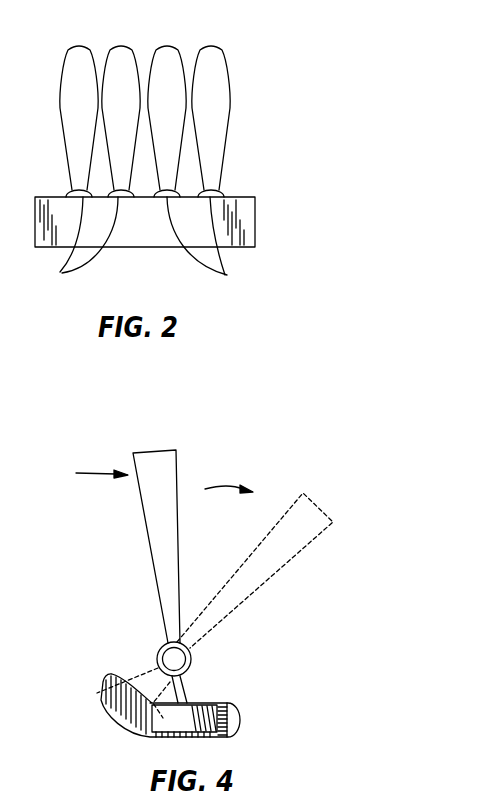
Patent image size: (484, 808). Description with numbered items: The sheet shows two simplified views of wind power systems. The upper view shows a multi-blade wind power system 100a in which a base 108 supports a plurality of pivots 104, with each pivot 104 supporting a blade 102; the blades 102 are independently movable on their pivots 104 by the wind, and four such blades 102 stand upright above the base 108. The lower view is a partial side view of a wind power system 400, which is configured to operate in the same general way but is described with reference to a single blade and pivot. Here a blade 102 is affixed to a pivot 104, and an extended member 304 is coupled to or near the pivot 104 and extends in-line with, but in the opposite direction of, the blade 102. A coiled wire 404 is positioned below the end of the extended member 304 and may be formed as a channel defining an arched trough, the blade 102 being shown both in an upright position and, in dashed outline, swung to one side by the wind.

In FIG. 2, the wind power system 100a is at (188, 146).
In FIG. 2, the blade 102 is at (85, 58).
In FIG. 4, the blade 102 is at (148, 500).
In FIG. 2, the pivot 104 is at (143, 241).
In FIG. 4, the pivot 104 is at (159, 650).
In FIG. 2, the base 108 is at (256, 221).
In FIG. 4, the wind power system 400 is at (182, 600).
In FIG. 4, the extended member 304 is at (184, 692).
In FIG. 4, the coiled wire 404 is at (240, 732).